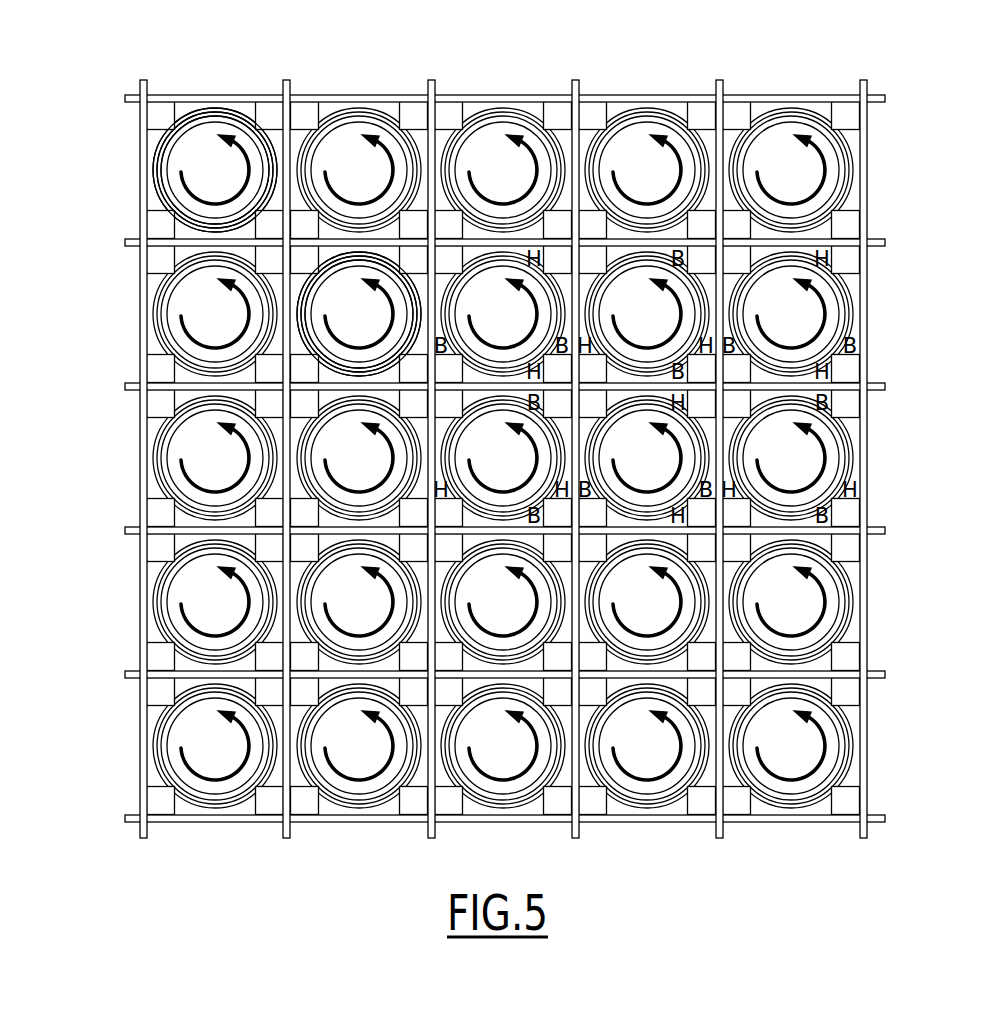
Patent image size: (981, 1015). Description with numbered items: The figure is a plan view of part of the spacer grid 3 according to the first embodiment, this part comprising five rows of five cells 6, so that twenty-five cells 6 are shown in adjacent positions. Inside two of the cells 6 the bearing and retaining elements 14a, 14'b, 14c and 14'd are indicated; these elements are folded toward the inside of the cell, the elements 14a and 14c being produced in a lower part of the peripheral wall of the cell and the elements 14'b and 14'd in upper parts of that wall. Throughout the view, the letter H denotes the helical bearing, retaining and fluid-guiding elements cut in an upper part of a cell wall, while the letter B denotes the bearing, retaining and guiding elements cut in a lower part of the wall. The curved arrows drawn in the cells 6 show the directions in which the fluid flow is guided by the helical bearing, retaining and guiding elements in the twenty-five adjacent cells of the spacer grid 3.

The spacer grid 3 is at (466, 497).
The cell 6 is at (220, 97).
The bearing and retaining element 14a is at (193, 108).
The bearing and retaining element 14'b is at (276, 448).
The bearing and retaining element 14c is at (390, 253).
The bearing and retaining element 14'd is at (209, 443).